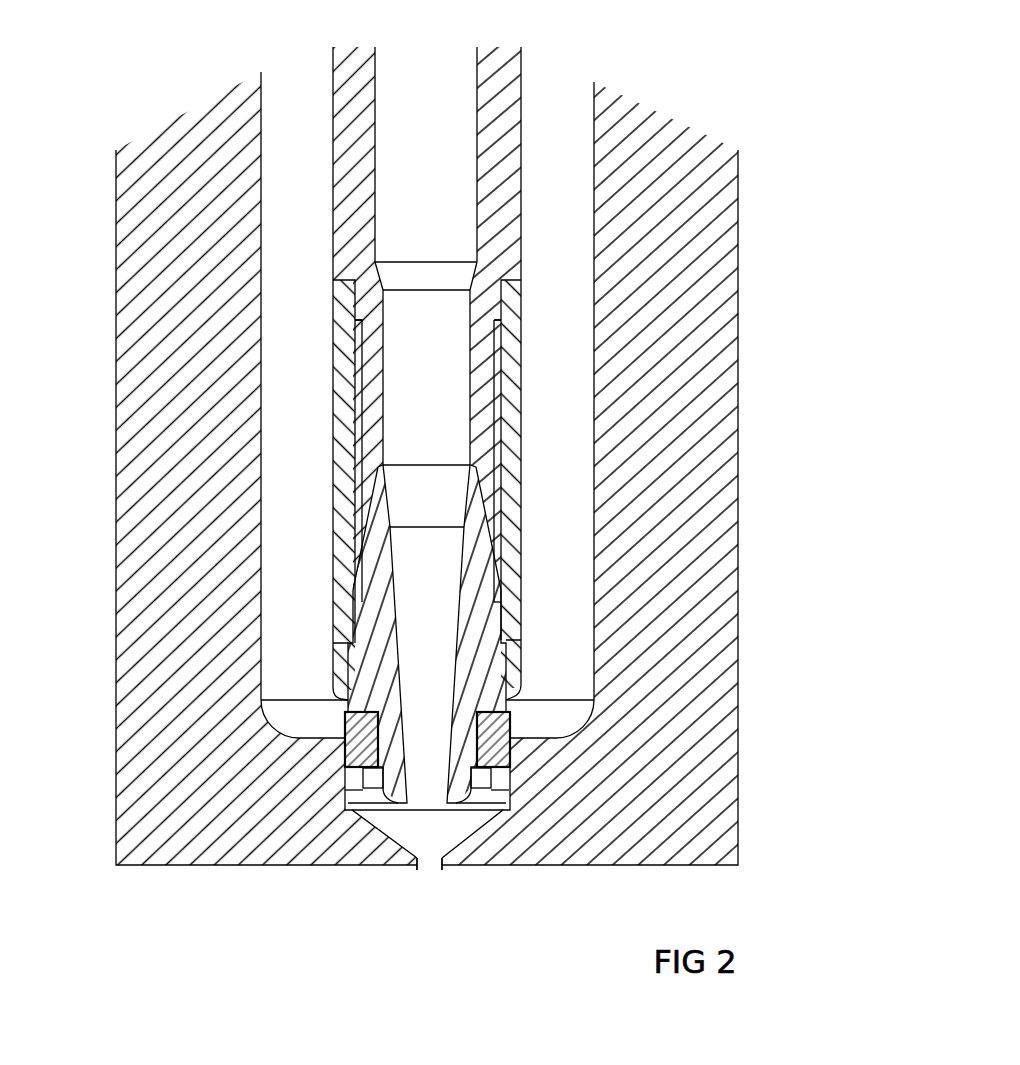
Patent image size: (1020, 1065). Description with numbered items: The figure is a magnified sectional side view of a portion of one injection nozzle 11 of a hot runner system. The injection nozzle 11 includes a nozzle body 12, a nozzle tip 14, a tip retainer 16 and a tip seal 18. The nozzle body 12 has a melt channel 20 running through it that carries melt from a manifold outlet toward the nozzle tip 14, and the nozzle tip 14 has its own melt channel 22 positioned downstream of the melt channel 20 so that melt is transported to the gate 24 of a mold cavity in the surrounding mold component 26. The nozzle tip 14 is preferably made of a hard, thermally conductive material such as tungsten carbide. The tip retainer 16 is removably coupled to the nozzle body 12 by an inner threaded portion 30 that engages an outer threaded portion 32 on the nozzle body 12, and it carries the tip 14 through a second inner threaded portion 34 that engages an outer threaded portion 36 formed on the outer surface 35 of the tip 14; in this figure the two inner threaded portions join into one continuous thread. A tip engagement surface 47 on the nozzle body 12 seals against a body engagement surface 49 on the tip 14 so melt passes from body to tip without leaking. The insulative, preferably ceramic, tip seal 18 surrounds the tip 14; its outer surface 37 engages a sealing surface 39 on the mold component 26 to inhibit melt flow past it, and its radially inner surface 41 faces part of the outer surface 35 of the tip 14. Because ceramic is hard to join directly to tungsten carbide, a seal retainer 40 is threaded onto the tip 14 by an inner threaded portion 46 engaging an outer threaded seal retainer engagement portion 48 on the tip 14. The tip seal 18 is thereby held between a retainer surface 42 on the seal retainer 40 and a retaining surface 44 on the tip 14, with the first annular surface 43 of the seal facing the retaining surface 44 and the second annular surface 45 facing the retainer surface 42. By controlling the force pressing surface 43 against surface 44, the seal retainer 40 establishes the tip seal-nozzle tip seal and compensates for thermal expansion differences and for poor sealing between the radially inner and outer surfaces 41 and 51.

The injection nozzle 11 is at (303, 66).
The nozzle body 12 is at (499, 175).
The nozzle tip 14 is at (500, 670).
The tip retainer 16 is at (510, 380).
The tip seal 18 is at (507, 762).
The melt channel 20 is at (447, 365).
The melt channel 22 is at (427, 567).
The gate 24 is at (418, 868).
The mold component 26 is at (680, 305).
The inner threaded portion 30 is at (360, 426).
The outer threaded portion 32 is at (355, 396).
The second inner threaded portion 34 is at (360, 517).
The outer surface 35 is at (345, 703).
The outer threaded portion 36 is at (356, 488).
The outer surface 37 is at (345, 765).
The sealing surface 39 is at (362, 775).
The seal retainer 40 is at (485, 783).
The radially inner surface 41 is at (447, 678).
The retainer surface 42 is at (506, 735).
The first annular surface 43 is at (507, 685).
The retaining surface 44 is at (497, 730).
The second annular surface 45 is at (512, 758).
The inner threaded portion 46 is at (457, 792).
The tip engagement surface 47 is at (362, 473).
The outer threaded seal retainer engagement portion 48 is at (491, 777).
The body engagement surface 49 is at (370, 467).
The radially outer surface 51 is at (347, 757).